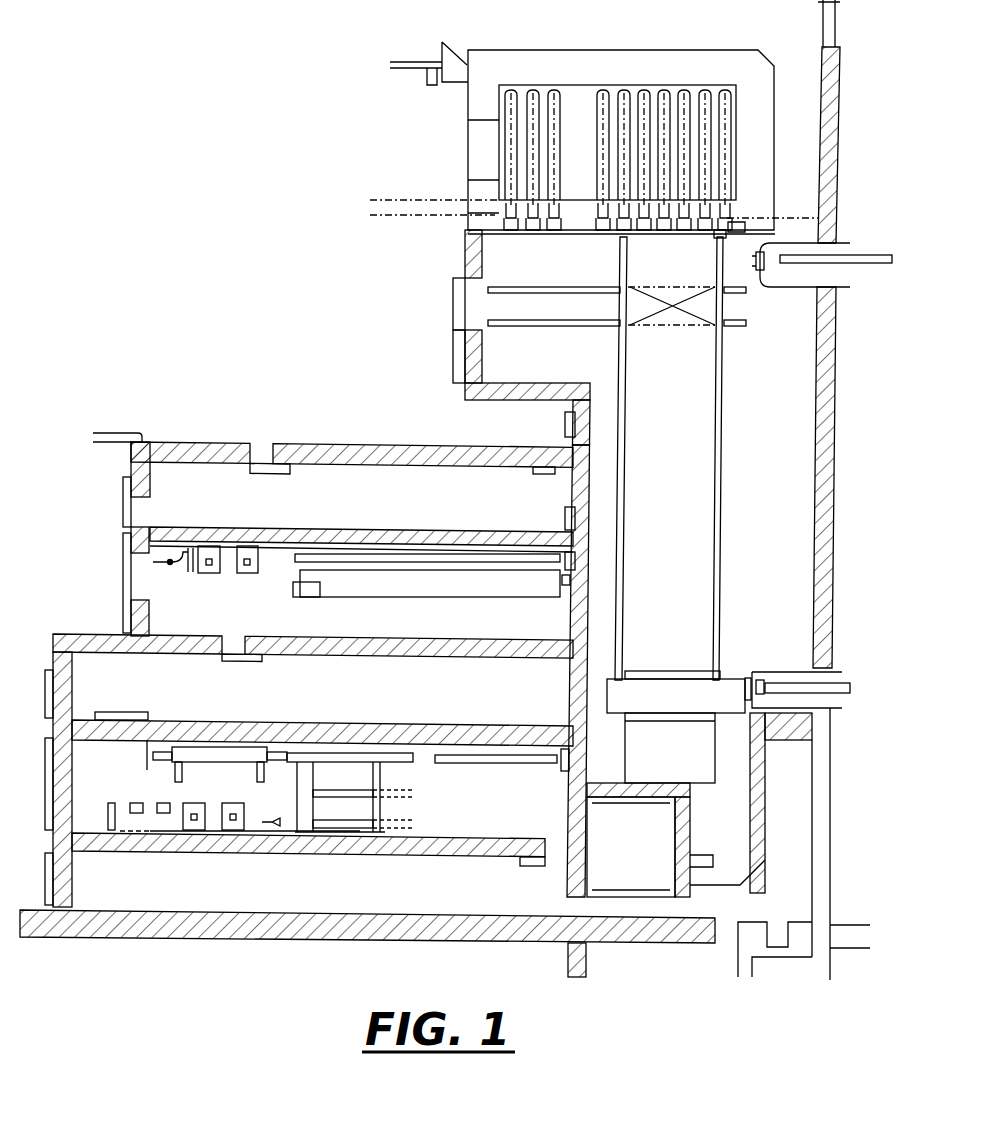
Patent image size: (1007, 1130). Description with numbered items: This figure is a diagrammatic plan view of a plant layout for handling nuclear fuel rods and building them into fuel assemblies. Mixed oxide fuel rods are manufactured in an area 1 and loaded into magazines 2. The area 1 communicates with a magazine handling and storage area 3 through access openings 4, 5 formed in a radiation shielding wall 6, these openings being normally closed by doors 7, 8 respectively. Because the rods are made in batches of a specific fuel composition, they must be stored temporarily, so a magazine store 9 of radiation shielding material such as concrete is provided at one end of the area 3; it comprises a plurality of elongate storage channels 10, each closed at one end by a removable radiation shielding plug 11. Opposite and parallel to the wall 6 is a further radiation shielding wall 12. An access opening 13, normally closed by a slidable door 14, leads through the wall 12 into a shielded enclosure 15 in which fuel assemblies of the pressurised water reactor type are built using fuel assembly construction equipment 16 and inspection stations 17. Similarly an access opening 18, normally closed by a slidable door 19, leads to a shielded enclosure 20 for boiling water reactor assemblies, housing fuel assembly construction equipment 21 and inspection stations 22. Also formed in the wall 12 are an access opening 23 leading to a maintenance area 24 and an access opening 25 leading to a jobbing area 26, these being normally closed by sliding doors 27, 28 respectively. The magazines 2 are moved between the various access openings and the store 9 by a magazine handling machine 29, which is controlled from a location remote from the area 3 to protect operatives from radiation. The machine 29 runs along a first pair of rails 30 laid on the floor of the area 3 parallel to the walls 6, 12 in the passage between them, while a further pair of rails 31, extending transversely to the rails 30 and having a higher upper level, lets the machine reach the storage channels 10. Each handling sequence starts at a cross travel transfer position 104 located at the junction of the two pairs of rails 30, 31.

The area 1 is at (813, 700).
The magazines 2 is at (865, 262).
The magazine handling and storage area 3 is at (783, 490).
The access opening 4 is at (720, 258).
The access opening 5 is at (755, 675).
The radiation shielding wall 6 is at (826, 343).
The door 7 is at (764, 246).
The door 8 is at (763, 690).
The magazine store 9 is at (762, 88).
The storage channels 10 is at (508, 168).
The radiation shielding plug 11 is at (728, 223).
The radiation shielding wall 12 is at (587, 480).
The access opening 13 is at (587, 758).
The slidable door 14 is at (560, 772).
The shielded enclosure 15 is at (367, 797).
The fuel assembly construction equipment 16 is at (402, 770).
The inspection stations 17 is at (180, 798).
The access opening 18 is at (585, 562).
The slidable door 19 is at (565, 586).
The shielded enclosure 20 is at (313, 635).
The fuel assembly construction equipment 21 is at (405, 604).
The inspection stations 22 is at (218, 580).
The access opening 23 is at (587, 517).
The maintenance area 24 is at (333, 534).
The access opening 25 is at (587, 422).
The jobbing area 26 is at (447, 316).
The sliding door 27 is at (567, 517).
The sliding door 28 is at (567, 425).
The magazine handling machine 29 is at (668, 678).
The first pair of rails 30 is at (717, 420).
The further pair of rails 31 is at (560, 318).
The cross travel transfer position 104 is at (672, 322).